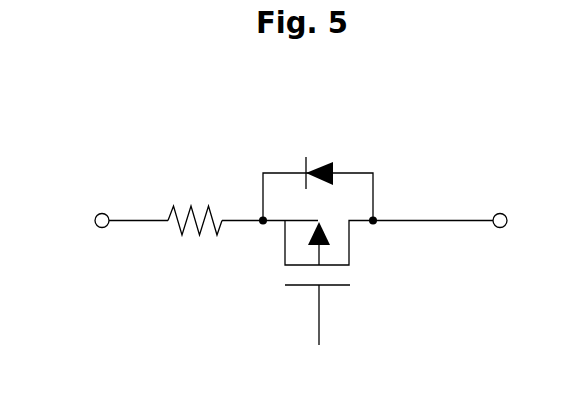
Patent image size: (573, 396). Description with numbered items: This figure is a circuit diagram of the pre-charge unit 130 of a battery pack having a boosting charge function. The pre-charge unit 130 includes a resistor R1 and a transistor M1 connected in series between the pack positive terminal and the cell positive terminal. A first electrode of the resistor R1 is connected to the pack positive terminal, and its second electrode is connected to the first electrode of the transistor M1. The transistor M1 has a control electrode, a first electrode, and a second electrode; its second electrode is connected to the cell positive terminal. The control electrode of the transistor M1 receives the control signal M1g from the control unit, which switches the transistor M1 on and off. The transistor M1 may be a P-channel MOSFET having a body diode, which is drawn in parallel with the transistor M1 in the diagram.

The pre-charge unit 130 is at (459, 161).
The resistor R1 is at (195, 247).
The transistor M1 is at (336, 304).
The control signal M1g is at (322, 336).